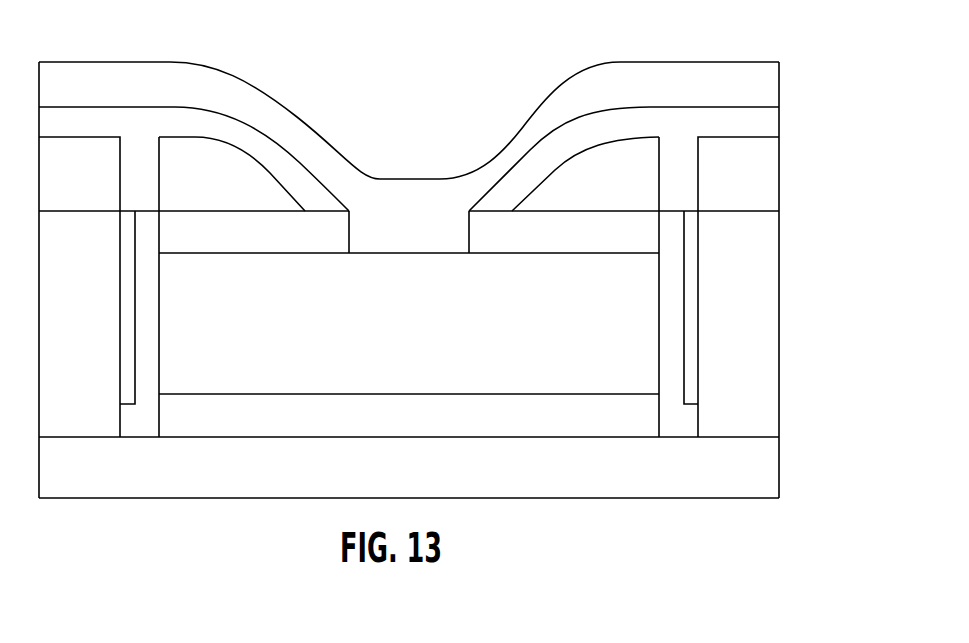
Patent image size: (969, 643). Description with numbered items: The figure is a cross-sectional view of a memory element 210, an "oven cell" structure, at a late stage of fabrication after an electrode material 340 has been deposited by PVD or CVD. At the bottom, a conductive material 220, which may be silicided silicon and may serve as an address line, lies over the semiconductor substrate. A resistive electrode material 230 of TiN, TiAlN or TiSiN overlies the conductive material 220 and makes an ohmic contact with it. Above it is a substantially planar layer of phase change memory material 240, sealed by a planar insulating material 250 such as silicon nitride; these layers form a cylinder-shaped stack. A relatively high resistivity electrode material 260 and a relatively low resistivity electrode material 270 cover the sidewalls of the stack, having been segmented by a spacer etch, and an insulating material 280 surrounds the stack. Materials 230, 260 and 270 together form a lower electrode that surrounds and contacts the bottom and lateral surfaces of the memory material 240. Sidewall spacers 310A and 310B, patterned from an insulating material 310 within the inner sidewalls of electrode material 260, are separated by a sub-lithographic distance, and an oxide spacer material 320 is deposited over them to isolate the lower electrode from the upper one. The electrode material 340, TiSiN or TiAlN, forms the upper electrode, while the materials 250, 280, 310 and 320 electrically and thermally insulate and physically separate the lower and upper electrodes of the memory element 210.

The memory element 210 is at (686, 526).
The conductive material 220 is at (760, 472).
The electrode material 230 is at (256, 423).
The memory material 240 is at (452, 375).
The insulating material 250 is at (488, 240).
The high resistivity electrode material 260 is at (690, 417).
The low resistivity electrode material 270 is at (690, 382).
The insulating material 280 is at (760, 303).
The insulating material 310 is at (760, 190).
The spacer 310A is at (202, 163).
The spacer 310B is at (605, 165).
The spacer material 320 is at (760, 132).
The electrode material 340 is at (760, 92).